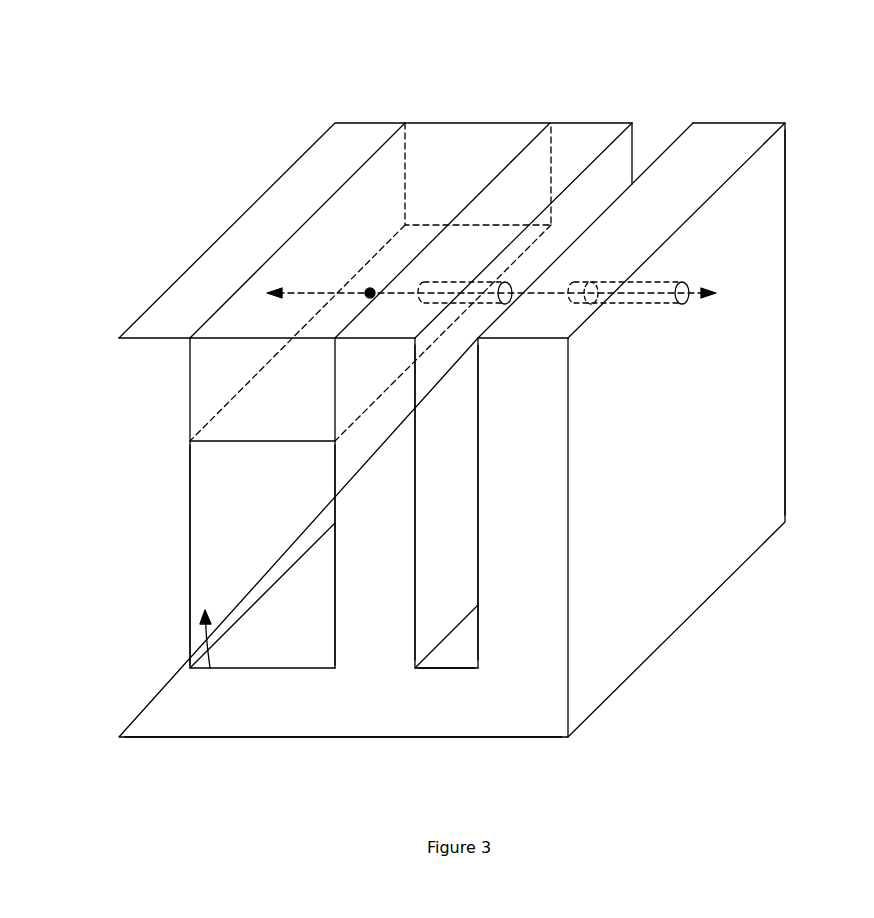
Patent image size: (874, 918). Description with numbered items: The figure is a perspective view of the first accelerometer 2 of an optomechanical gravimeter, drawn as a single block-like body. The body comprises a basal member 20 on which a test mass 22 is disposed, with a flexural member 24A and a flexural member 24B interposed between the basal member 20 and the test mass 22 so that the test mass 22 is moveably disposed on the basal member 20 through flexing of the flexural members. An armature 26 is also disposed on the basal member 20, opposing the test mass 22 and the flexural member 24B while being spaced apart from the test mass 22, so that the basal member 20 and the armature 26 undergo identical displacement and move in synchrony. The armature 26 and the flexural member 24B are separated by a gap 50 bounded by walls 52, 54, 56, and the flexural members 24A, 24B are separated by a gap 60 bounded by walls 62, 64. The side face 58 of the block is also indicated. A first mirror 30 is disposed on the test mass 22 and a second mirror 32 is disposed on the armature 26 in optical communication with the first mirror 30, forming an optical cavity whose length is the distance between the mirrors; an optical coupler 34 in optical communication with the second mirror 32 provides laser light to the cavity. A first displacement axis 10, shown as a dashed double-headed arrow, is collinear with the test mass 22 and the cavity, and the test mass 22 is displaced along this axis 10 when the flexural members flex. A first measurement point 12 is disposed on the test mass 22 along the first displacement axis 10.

The first accelerometer 2 is at (62, 52).
The first displacement axis 10 is at (288, 292).
The first measurement point 12 is at (370, 290).
The basal member 20 is at (280, 720).
The test mass 22 is at (457, 140).
The flexural member 24A is at (137, 520).
The flexural member 24B is at (570, 138).
The armature 26 is at (712, 140).
The first mirror 30 is at (492, 300).
The second mirror 32 is at (582, 283).
The optical coupler 34 is at (650, 307).
The gap 50 is at (652, 134).
The wall 52 is at (612, 163).
The wall 54 is at (689, 120).
The wall 56 is at (432, 670).
The side face 58 is at (760, 243).
The gap 60 is at (210, 668).
The wall 62 is at (190, 637).
The wall 64 is at (335, 637).